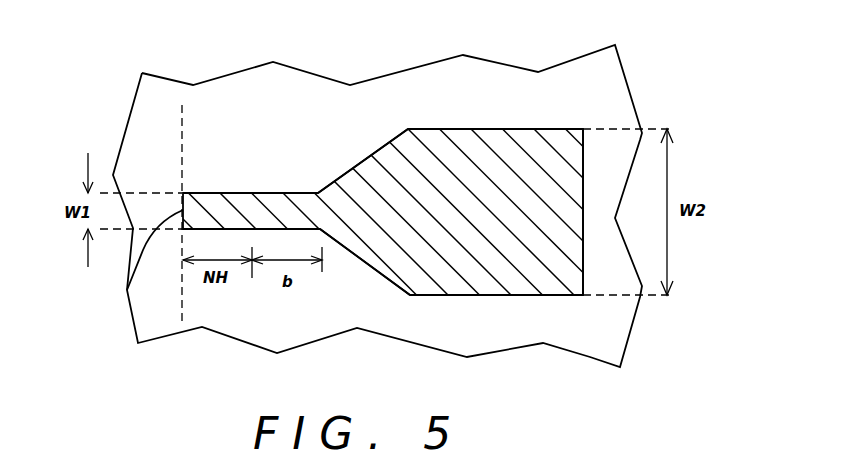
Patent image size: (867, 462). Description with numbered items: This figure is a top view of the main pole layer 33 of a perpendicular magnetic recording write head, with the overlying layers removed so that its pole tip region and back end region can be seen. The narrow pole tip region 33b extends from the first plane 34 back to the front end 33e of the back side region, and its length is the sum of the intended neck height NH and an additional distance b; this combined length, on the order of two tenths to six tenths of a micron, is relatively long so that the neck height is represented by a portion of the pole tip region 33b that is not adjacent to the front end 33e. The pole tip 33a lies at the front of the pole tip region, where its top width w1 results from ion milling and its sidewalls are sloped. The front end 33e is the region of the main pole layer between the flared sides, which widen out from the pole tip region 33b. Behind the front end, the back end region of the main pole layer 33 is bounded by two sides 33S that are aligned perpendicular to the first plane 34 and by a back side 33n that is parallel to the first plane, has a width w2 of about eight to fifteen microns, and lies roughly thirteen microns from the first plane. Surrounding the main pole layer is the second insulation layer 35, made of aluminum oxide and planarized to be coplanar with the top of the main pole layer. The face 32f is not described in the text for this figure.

The front face of substrate 32f is at (355, 167).
The main pole layer 33 is at (553, 160).
The pole tip 33a is at (126, 292).
The pole tip region 33b is at (323, 167).
The front end 33e is at (408, 123).
The sides 33S is at (497, 128).
The back side 33n is at (588, 275).
The first plane 34 is at (183, 105).
The second insulation layer 35 is at (613, 347).